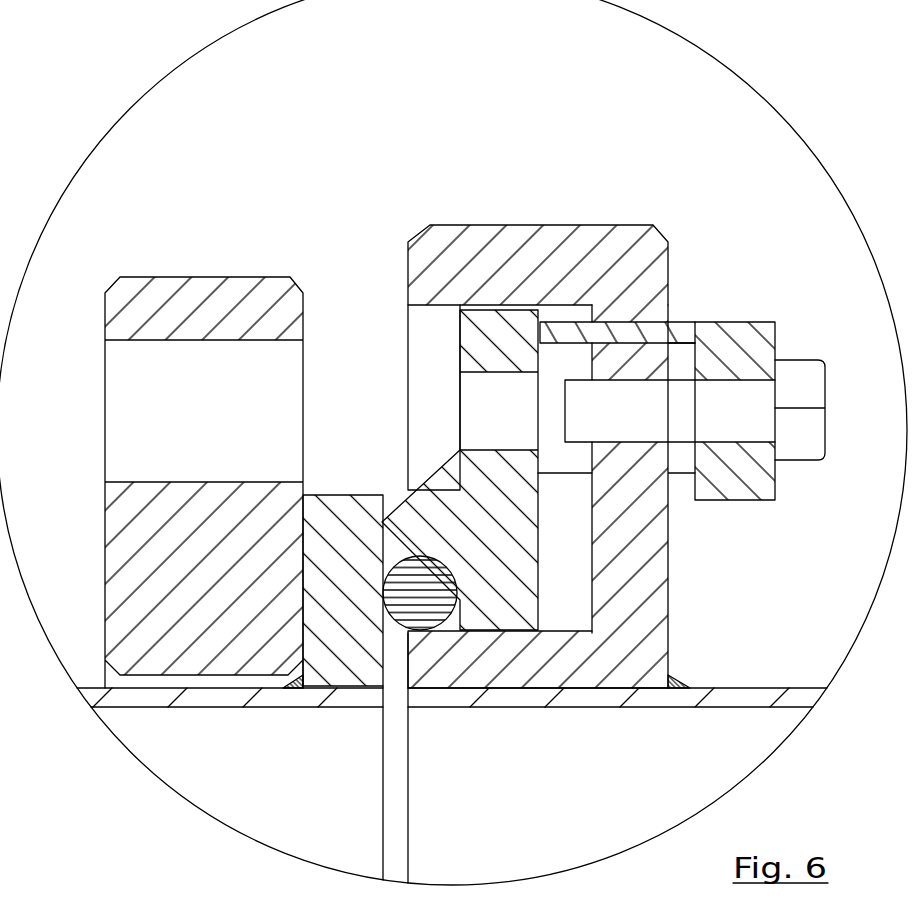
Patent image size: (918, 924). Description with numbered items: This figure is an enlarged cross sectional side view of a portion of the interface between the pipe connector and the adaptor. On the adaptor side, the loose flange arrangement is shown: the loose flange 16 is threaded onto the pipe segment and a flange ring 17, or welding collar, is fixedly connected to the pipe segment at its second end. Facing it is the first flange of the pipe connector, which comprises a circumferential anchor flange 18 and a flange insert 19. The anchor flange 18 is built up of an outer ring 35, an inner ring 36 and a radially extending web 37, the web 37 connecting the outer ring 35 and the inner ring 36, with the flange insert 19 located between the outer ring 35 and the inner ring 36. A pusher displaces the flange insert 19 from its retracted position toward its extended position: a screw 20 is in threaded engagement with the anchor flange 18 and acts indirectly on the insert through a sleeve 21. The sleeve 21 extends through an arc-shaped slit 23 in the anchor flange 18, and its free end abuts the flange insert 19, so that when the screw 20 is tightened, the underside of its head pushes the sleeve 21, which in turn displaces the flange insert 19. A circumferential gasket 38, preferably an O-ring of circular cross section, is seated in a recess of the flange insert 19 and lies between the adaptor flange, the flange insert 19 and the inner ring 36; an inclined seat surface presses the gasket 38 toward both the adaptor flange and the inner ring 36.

The loose flange 16 is at (196, 293).
The flange ring 17 is at (348, 653).
The anchor flange 18 is at (575, 459).
The flange insert 19 is at (427, 513).
The screw 20 is at (802, 378).
The sleeve 21 is at (752, 343).
The arc-shaped slit 23 is at (670, 322).
The outer ring 35 is at (445, 233).
The inner ring 36 is at (533, 665).
The radially extending web 37 is at (658, 567).
The circumferential gasket 38 is at (433, 613).